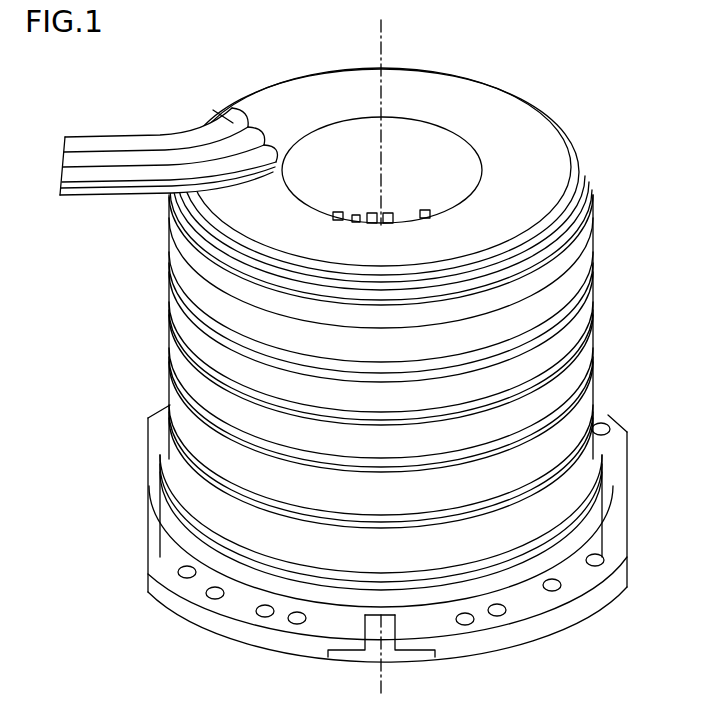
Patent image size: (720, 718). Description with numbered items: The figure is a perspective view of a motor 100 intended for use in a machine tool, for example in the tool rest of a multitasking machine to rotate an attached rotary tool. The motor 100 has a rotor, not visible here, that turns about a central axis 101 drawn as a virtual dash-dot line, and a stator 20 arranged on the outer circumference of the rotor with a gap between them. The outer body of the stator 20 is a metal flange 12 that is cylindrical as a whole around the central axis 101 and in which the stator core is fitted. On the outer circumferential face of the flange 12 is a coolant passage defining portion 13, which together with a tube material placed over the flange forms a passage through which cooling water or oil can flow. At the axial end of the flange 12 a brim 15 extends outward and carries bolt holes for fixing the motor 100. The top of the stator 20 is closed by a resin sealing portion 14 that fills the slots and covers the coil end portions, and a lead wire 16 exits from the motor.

The motor 100 is at (567, 78).
The central axis 101 is at (383, 37).
The flange 12 is at (600, 593).
The coolant passage defining portion 13 is at (595, 400).
The resin sealing portion 14 is at (537, 152).
The brim 15 is at (167, 558).
The lead wire 16 is at (105, 147).
The stator 20 is at (268, 73).